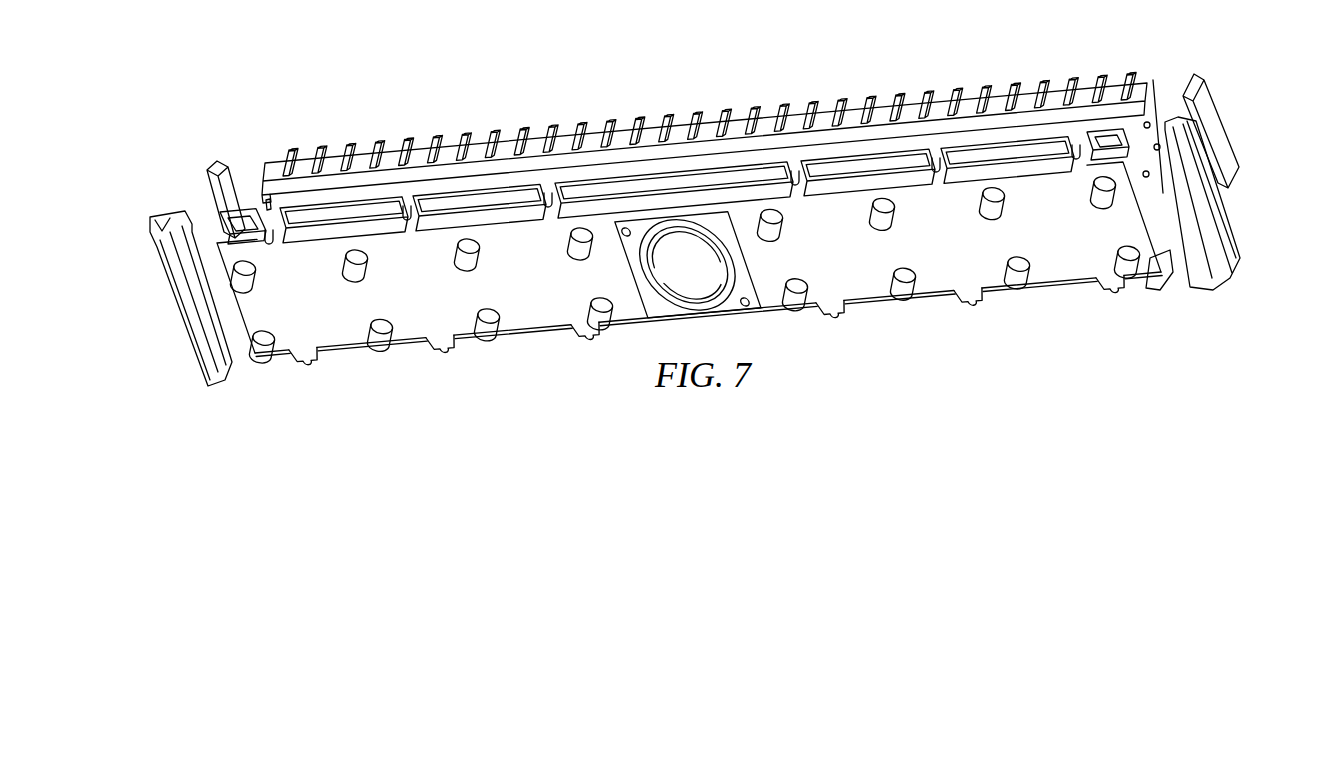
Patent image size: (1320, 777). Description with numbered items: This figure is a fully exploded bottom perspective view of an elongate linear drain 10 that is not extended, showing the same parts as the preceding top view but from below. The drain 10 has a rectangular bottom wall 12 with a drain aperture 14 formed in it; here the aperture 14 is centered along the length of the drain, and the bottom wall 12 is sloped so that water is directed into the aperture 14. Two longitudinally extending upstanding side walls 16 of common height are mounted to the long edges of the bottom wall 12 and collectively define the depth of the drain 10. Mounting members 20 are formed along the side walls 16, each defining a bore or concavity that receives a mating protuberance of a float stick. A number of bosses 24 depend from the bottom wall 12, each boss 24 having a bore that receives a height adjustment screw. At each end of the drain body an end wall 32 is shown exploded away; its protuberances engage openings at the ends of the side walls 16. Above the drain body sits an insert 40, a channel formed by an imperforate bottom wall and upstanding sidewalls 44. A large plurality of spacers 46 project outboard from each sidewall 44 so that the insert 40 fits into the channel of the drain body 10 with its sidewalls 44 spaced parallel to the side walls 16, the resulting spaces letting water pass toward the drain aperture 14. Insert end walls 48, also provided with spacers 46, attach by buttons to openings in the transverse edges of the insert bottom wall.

The elongate linear drain 10 is at (707, 224).
The rectangular bottom wall 12 is at (552, 300).
The drain aperture 14 is at (712, 258).
The upstanding side walls 16 is at (343, 228).
The mounting members 20 is at (406, 210).
The boss 24 is at (346, 277).
The end wall 32 is at (172, 320).
The insert 40 is at (704, 127).
The upstanding sidewalls 44 is at (471, 152).
The spacers 46 is at (372, 150).
The insert end wall 48 is at (207, 173).